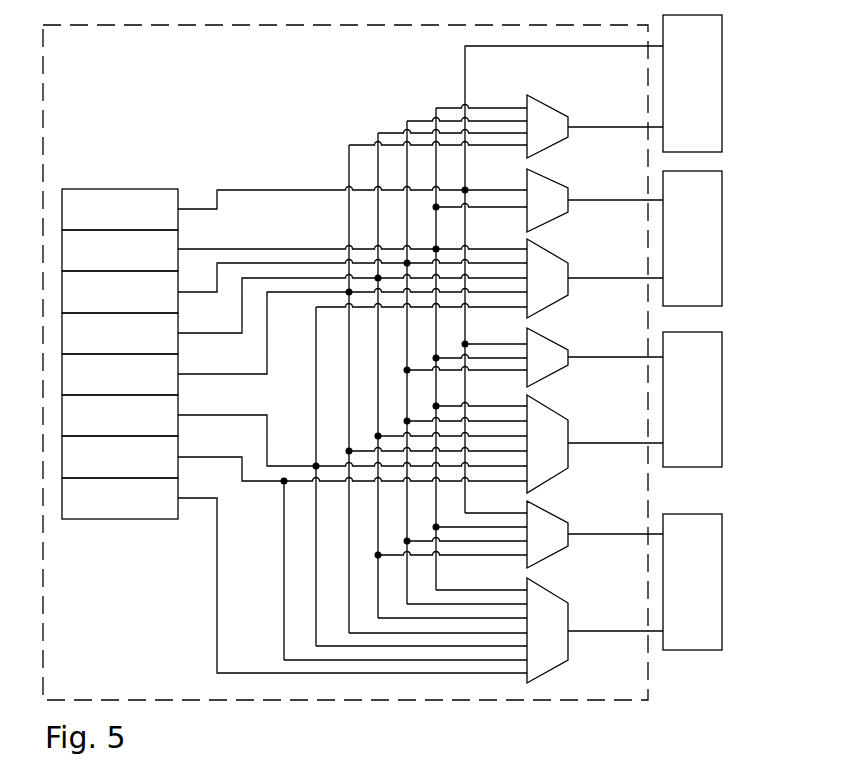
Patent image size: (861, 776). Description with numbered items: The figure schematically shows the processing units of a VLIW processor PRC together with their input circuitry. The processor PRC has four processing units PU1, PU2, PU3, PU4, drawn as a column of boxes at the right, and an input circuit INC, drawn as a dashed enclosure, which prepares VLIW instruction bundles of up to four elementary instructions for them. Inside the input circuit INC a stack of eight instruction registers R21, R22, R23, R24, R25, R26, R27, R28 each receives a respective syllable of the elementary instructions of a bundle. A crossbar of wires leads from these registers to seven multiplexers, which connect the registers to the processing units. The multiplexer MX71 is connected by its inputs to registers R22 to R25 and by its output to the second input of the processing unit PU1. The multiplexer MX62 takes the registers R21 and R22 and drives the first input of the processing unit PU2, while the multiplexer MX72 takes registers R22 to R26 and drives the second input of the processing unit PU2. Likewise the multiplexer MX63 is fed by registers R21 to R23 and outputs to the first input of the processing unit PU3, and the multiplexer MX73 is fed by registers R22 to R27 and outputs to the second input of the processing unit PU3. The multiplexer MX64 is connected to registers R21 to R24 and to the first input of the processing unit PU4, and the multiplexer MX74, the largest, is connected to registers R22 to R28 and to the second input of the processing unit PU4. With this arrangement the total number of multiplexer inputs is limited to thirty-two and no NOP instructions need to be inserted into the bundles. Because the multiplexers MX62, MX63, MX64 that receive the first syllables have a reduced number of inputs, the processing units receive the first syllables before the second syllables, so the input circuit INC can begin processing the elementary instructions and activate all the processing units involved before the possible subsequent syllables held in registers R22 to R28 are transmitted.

The instruction register R21 is at (141, 219).
The instruction register R22 is at (141, 260).
The instruction register R23 is at (141, 302).
The instruction register R24 is at (141, 343).
The instruction register R25 is at (141, 384).
The instruction register R26 is at (141, 425).
The instruction register R27 is at (141, 467).
The instruction register R28 is at (141, 508).
The multiplexer MX71 is at (566, 85).
The multiplexer MX62 is at (548, 181).
The multiplexer MX72 is at (546, 252).
The multiplexer MX63 is at (550, 343).
The multiplexer MX73 is at (550, 406).
The multiplexer MX64 is at (549, 510).
The multiplexer MX74 is at (559, 665).
The processing unit PU1 is at (710, 91).
The processing unit PU2 is at (710, 245).
The processing unit PU3 is at (710, 406).
The processing unit PU4 is at (710, 591).
The input circuit INC is at (278, 95).
The processor PRC is at (396, 378).